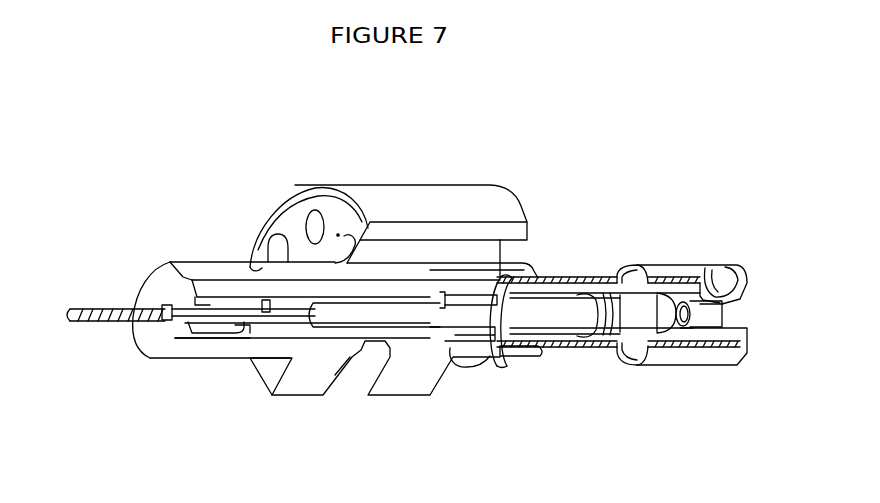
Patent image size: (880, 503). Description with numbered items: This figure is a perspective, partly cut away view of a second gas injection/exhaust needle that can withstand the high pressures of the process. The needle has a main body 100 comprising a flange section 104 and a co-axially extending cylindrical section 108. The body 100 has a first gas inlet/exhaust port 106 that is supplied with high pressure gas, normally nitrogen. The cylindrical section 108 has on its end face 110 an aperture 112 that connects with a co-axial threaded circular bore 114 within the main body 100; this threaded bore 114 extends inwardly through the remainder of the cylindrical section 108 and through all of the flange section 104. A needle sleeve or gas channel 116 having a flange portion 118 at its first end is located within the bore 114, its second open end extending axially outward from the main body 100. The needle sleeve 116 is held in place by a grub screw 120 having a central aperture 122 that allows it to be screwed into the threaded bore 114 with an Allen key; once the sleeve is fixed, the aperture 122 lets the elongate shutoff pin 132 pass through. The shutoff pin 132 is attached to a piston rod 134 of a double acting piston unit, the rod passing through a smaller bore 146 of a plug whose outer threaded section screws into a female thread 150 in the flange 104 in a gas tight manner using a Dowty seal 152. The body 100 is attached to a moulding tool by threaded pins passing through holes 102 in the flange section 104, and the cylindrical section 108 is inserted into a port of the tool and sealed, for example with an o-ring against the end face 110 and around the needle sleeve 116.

The main body 100 is at (400, 192).
The holes 102 is at (352, 242).
The flange section 104 is at (286, 222).
The first gas inlet/exhaust port 106 is at (358, 362).
The cylindrical section 108 is at (213, 262).
The end face 110 is at (145, 293).
The aperture 112 is at (172, 313).
The threaded circular bore 114 is at (283, 305).
The needle sleeve 116 is at (83, 310).
The flange portion 118 is at (193, 340).
The grub screw 120 is at (222, 338).
The central aperture 122 is at (240, 337).
The shutoff pin 132 is at (265, 312).
The piston rod 134 is at (530, 317).
The smaller bore 146 is at (537, 345).
The female thread 150 is at (467, 287).
The Dowty seal 152 is at (480, 367).